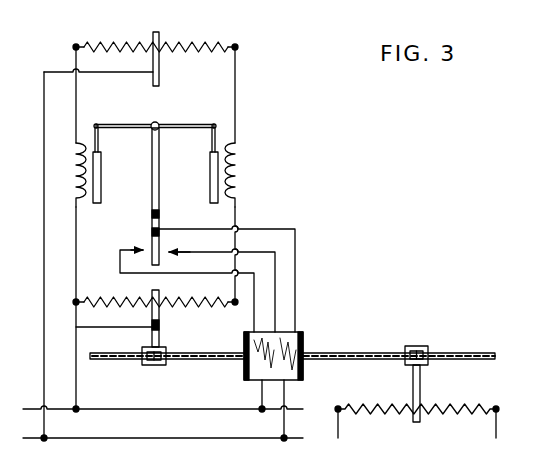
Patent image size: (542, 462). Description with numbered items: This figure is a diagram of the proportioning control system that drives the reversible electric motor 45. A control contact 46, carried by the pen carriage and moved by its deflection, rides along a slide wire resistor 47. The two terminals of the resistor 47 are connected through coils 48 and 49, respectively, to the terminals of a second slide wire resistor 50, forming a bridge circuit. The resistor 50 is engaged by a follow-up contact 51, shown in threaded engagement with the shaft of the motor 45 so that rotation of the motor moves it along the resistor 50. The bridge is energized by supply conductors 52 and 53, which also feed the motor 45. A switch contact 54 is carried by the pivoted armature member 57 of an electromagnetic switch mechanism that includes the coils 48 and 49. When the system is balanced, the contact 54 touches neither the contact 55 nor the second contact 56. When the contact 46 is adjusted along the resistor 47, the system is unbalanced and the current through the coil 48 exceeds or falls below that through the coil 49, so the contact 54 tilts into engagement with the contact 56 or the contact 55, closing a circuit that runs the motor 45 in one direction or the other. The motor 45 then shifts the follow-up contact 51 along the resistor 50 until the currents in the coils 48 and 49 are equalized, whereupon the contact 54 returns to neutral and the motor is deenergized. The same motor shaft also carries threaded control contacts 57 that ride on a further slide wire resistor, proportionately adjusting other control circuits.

The reversible electric motor 45 is at (300, 332).
The control contact 46 is at (160, 63).
The slide wire resistor 47 is at (126, 44).
The coil 48 is at (79, 176).
The coil 49 is at (234, 178).
The second slide wire resistor 50 is at (125, 295).
The follow-up contact 51 is at (160, 318).
The supply conductor 52 is at (152, 408).
The supply conductor 53 is at (155, 437).
The switch contact 54 is at (151, 232).
The contact 55 is at (141, 249).
The second contact 56 is at (172, 251).
The pivoted armature member 57 is at (136, 124).